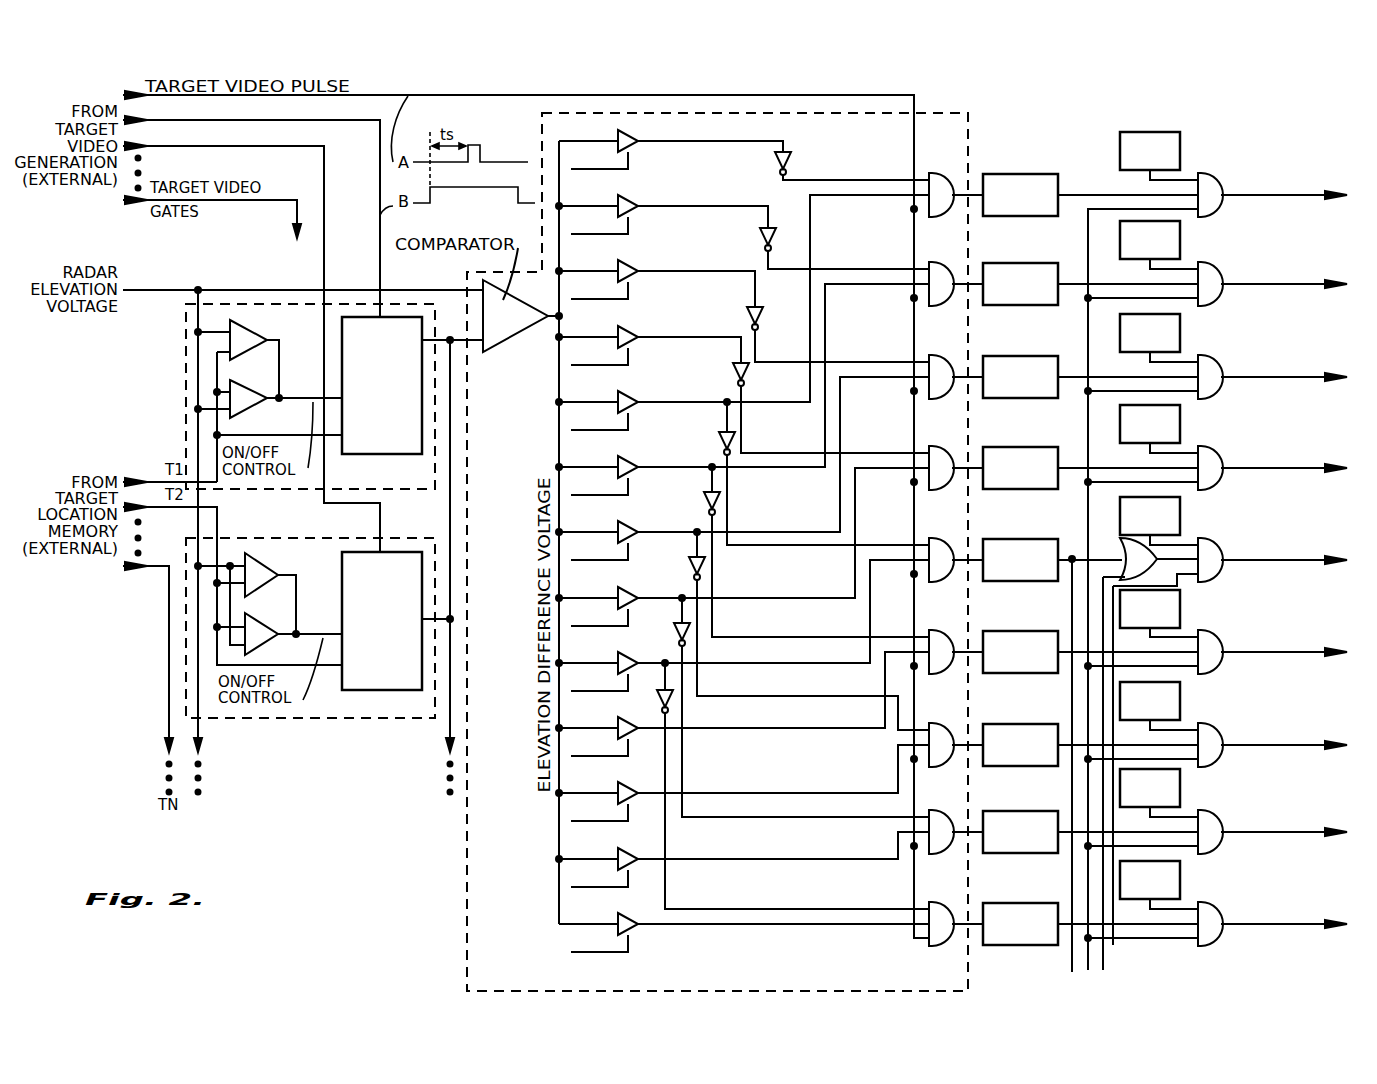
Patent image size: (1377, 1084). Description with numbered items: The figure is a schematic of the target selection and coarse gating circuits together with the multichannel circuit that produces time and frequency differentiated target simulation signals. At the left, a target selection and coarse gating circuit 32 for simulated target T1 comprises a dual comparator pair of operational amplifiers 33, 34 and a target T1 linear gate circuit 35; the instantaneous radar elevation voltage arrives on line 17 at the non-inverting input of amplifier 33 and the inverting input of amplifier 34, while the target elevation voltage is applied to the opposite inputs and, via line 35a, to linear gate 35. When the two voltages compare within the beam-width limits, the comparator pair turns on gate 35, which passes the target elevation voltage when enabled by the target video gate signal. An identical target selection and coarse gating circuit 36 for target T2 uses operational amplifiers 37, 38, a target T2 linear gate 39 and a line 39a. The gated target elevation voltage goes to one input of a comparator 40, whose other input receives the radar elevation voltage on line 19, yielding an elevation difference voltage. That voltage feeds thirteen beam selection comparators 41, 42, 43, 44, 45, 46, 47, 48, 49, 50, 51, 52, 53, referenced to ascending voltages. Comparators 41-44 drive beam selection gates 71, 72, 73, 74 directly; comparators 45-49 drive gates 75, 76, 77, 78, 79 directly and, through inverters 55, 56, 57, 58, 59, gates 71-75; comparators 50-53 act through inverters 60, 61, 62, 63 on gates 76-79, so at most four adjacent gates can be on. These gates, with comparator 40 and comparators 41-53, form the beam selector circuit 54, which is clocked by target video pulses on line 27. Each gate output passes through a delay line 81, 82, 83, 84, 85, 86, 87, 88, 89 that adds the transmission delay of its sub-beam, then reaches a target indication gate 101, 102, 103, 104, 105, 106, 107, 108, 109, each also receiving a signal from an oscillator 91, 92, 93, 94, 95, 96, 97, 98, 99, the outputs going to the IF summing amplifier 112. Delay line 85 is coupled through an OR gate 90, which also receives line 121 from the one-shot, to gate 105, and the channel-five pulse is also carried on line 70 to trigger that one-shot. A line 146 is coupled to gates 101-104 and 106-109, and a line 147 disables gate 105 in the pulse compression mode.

The line 17 is at (160, 290).
The line 19 is at (412, 290).
The line 27 is at (662, 95).
The target selection and coarse gating circuit 32 is at (430, 489).
The operational amplifier 33 is at (250, 335).
The operational amplifier 34 is at (268, 393).
The target T1 linear gate circuit 35 is at (383, 454).
The line 35a is at (294, 435).
The target selection and coarse gating circuit 36 is at (300, 535).
The operational amplifier 37 is at (271, 564).
The operational amplifier 38 is at (283, 630).
The target T2 linear gate 39 is at (395, 689).
The line 39a is at (257, 666).
The comparator 40 is at (496, 343).
The beam selection comparator 41 is at (618, 928).
The beam selection comparator 42 is at (618, 863).
The beam selection comparator 43 is at (618, 797).
The beam selection comparator 44 is at (618, 732).
The beam selection comparator 45 is at (618, 667).
The beam selection comparator 46 is at (618, 602).
The beam selection comparator 47 is at (618, 536).
The beam selection comparator 48 is at (618, 471).
The beam selection comparator 49 is at (634, 399).
The beam selection comparator 50 is at (634, 334).
The beam selection comparator 51 is at (634, 268).
The beam selection comparator 52 is at (634, 203).
The beam selection comparator 53 is at (634, 138).
The beam selector circuit 54 is at (949, 110).
The inverter 55 is at (658, 691).
The inverter 56 is at (674, 632).
The inverter 57 is at (689, 565).
The inverter 58 is at (704, 499).
The inverter 59 is at (719, 438).
The inverter 60 is at (733, 368).
The inverter 61 is at (746, 310).
The inverter 62 is at (760, 241).
The inverter 63 is at (791, 164).
The line 70 is at (1072, 962).
The beam selection gate 71 is at (952, 902).
The beam selection gate 72 is at (952, 810).
The beam selection gate 73 is at (952, 723).
The beam selection gate 74 is at (952, 630).
The beam selection gate 75 is at (952, 538).
The beam selection gate 76 is at (952, 446).
The beam selection gate 77 is at (952, 355).
The beam selection gate 78 is at (952, 262).
The beam selection gate 79 is at (952, 173).
The delay line 81 is at (1025, 903).
The delay line 82 is at (1025, 811).
The delay line 83 is at (1025, 724).
The delay line 84 is at (1025, 631).
The delay line 85 is at (1025, 539).
The delay line 86 is at (1025, 447).
The delay line 87 is at (1025, 356).
The delay line 88 is at (1025, 263).
The delay line 89 is at (1025, 174).
The OR gate 90 is at (1120, 540).
The oscillator 91 is at (1182, 887).
The oscillator 92 is at (1182, 795).
The oscillator 93 is at (1182, 708).
The oscillator 94 is at (1182, 615).
The oscillator 95 is at (1182, 523).
The oscillator 96 is at (1182, 431).
The oscillator 97 is at (1182, 340).
The oscillator 98 is at (1182, 247).
The oscillator 99 is at (1180, 134).
The target indication gate 101 is at (1206, 903).
The target indication gate 102 is at (1206, 811).
The target indication gate 103 is at (1206, 724).
The target indication gate 104 is at (1206, 631).
The target indication gate 105 is at (1206, 539).
The target indication gate 106 is at (1206, 447).
The target indication gate 107 is at (1206, 356).
The target indication gate 108 is at (1206, 263).
The target indication gate 109 is at (1206, 174).
The IF summing amplifier 112 is at (1362, 550).
The line 121 is at (1105, 956).
The line 146 is at (1091, 966).
The line 147 is at (1116, 946).